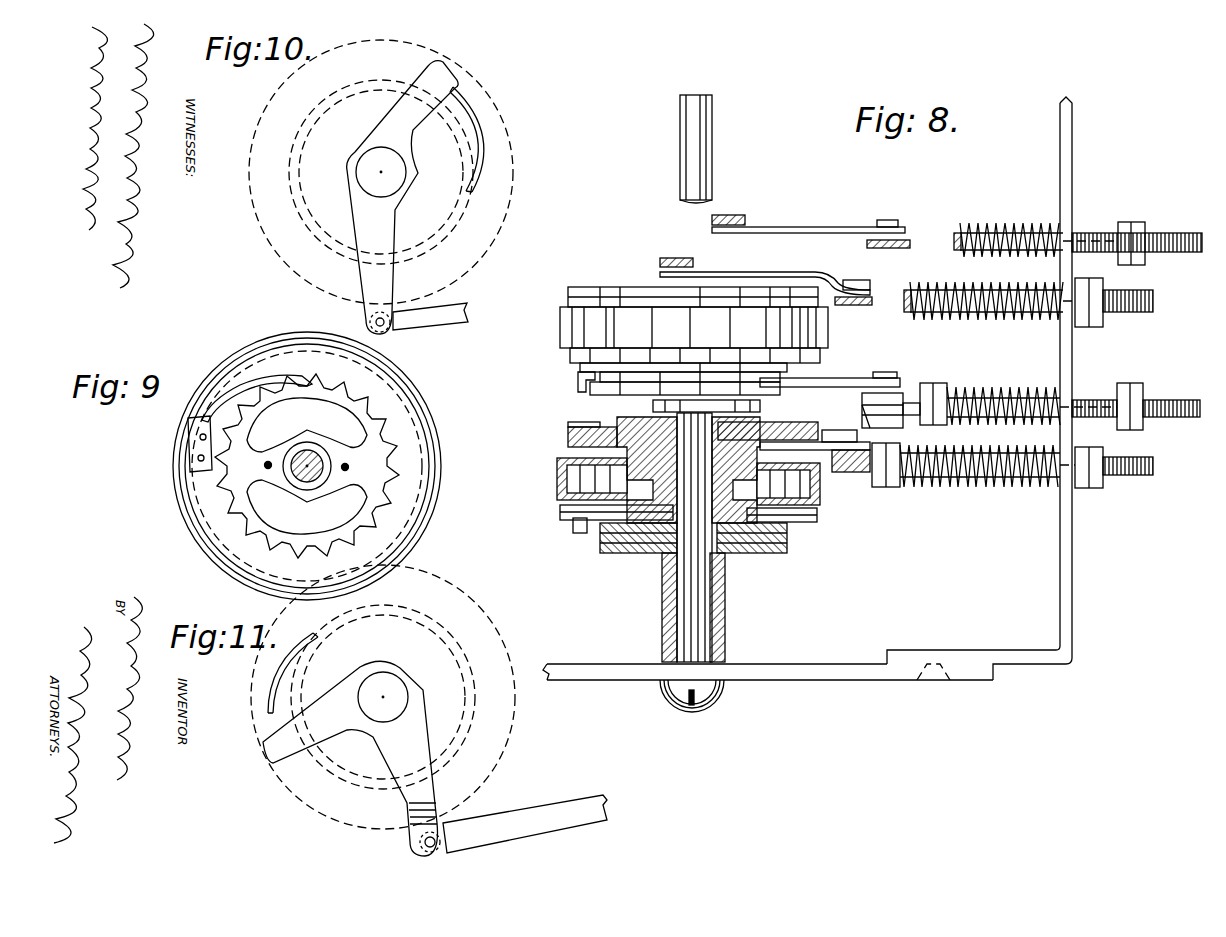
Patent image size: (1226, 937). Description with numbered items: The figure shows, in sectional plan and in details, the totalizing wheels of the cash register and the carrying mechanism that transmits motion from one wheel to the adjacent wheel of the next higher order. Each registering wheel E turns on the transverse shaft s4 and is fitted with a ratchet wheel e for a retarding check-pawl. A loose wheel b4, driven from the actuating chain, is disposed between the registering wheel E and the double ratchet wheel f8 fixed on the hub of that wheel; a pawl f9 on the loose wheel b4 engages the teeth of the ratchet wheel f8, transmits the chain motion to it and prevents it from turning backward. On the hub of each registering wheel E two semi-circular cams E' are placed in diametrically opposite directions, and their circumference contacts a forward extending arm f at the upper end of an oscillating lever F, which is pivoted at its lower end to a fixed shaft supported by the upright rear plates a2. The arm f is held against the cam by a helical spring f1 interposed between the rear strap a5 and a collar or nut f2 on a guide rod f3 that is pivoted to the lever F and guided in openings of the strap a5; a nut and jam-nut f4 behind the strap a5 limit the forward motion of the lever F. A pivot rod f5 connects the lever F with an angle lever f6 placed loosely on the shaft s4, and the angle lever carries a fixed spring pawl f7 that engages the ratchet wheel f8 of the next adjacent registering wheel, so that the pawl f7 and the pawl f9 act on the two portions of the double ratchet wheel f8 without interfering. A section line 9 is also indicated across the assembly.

In FIG. 8, the transverse shaft s4 is at (690, 600).
In FIG. 9, the transverse shaft s4 is at (325, 462).
In FIG. 8, the angle lever f6 is at (689, 303).
In FIG. 10, the angle lever f6 is at (402, 197).
In FIG. 11, the angle lever f6 is at (318, 722).
In FIG. 8, the pivot rod f5 is at (782, 337).
In FIG. 10, the pivot rod f5 is at (430, 324).
In FIG. 11, the pivot rod f5 is at (525, 816).
In FIG. 8, the oscillating lever F is at (875, 314).
In FIG. 8, the semi-circular cam E' is at (672, 358).
In FIG. 8, the ratchet wheel e is at (556, 429).
In FIG. 8, the registering wheel E is at (691, 406).
In FIG. 9, the registering wheel E is at (301, 466).
In FIG. 8, the loose wheel b4 is at (570, 358).
In FIG. 9, the loose wheel b4 is at (406, 410).
In FIG. 8, the double ratchet wheel f8 is at (689, 378).
In FIG. 9, the double ratchet wheel f8 is at (307, 466).
In FIG. 10, the double ratchet wheel f8 is at (450, 234).
In FIG. 11, the double ratchet wheel f8 is at (455, 644).
In FIG. 8, the spring pawl f7 is at (578, 376).
In FIG. 10, the spring pawl f7 is at (479, 139).
In FIG. 11, the spring pawl f7 is at (293, 673).
In FIG. 8, the forward extending arm f is at (830, 446).
In FIG. 8, the pawl f9 is at (573, 532).
In FIG. 9, the pawl f9 is at (306, 378).
In FIG. 8, the section line 9 is at (570, 540).
In FIG. 8, the spring f1 is at (981, 354).
In FIG. 8, the collar or nut f2 is at (911, 433).
In FIG. 8, the guide rod f3 is at (1131, 365).
In FIG. 8, the nut and jam-nut f4 is at (1095, 503).
In FIG. 8, the rear strap a5 is at (994, 388).
In FIG. 8, the upright rear plate a2 is at (768, 678).